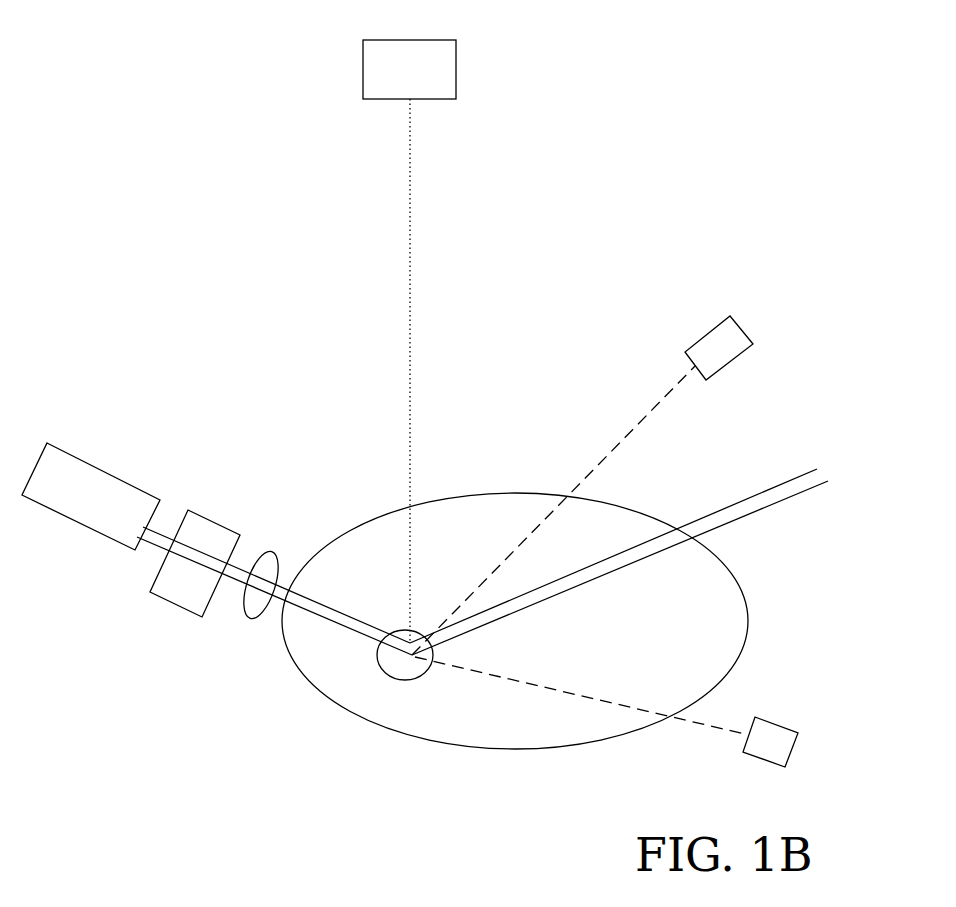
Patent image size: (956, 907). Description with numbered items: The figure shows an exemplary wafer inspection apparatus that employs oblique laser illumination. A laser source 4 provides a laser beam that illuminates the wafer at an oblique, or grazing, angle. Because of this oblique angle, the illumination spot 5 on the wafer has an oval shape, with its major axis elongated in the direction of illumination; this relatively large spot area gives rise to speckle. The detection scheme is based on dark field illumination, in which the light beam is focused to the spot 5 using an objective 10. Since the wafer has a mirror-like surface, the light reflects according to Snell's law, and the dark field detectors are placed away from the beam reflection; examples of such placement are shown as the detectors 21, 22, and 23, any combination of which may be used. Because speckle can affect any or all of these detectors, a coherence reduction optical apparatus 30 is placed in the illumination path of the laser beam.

The laser source 4 is at (90, 478).
The coherence reduction optical apparatus 30 is at (215, 525).
The objective 10 is at (270, 552).
The illumination spot 5 is at (377, 665).
The detector 21 is at (456, 40).
The detector 22 is at (748, 330).
The detector 23 is at (795, 733).